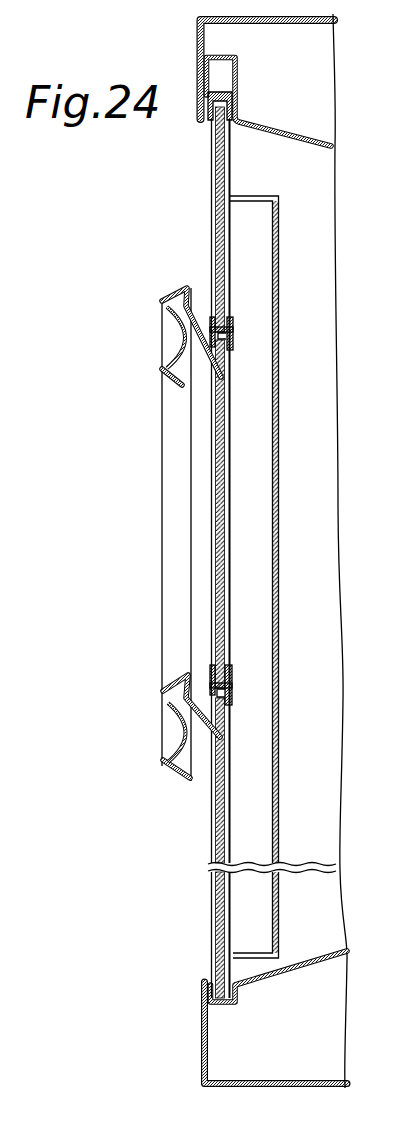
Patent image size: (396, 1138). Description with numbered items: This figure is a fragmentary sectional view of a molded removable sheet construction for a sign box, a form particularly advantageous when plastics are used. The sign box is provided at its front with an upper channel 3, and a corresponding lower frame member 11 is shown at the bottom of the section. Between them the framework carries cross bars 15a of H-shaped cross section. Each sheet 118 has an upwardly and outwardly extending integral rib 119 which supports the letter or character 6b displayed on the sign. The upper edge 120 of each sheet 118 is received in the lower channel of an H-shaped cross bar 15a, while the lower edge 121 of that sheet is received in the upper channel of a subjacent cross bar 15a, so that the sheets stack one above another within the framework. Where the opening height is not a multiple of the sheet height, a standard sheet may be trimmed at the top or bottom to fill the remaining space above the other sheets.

The upper channel 3 is at (223, 72).
The lower frame channel 11 is at (228, 1003).
The sheet 118 is at (225, 519).
The letters or characters 6b is at (152, 534).
The integral rib 119 is at (207, 381).
The cross bars 15a is at (212, 320).
The upper edge 120 is at (229, 336).
The lower edge 121 is at (215, 668).